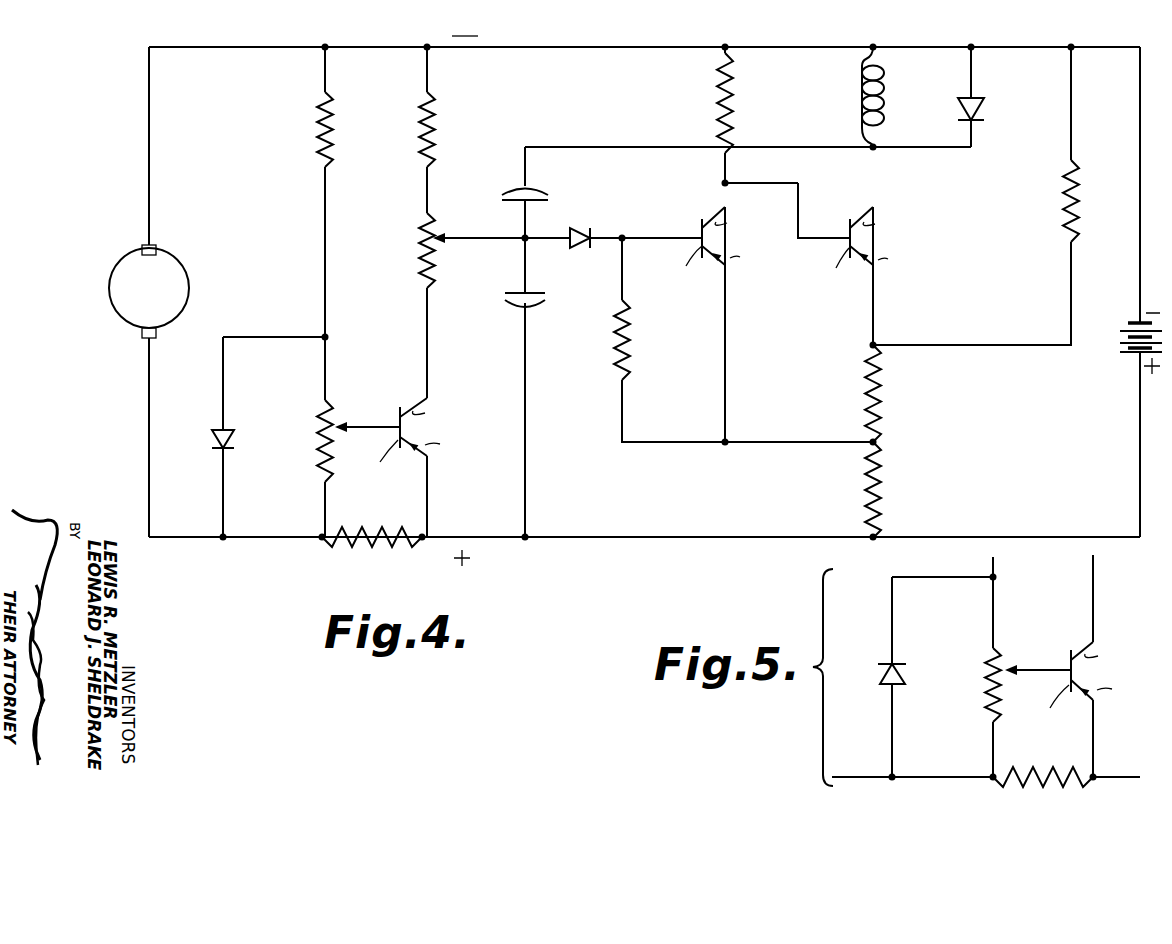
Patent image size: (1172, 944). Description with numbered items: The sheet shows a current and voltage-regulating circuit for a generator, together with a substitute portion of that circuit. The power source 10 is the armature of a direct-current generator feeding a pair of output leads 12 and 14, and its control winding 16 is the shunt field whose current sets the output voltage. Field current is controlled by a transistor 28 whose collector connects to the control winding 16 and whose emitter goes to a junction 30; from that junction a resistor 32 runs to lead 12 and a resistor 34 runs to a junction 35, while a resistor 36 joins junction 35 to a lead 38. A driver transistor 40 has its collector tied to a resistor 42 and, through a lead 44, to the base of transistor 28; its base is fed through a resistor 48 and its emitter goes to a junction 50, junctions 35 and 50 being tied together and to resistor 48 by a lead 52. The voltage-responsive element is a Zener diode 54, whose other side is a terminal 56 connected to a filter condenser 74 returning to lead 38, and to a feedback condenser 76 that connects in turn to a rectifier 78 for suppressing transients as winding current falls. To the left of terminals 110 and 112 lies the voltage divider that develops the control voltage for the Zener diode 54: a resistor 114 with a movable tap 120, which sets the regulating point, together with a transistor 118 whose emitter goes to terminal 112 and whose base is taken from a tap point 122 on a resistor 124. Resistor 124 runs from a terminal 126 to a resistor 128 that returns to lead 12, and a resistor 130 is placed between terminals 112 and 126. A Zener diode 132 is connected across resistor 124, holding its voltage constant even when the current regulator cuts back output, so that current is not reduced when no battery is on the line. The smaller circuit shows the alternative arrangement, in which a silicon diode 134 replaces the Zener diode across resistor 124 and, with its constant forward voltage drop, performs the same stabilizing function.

In FIG. 4, the power source 10 is at (178, 281).
In FIG. 4, the direct-current output lead 12 is at (193, 47).
In FIG. 4, the direct-current output lead 14 is at (150, 436).
In FIG. 4, the control winding 16 is at (860, 88).
In FIG. 4, the transistor 28 is at (848, 234).
In FIG. 4, the junction 30 is at (870, 343).
In FIG. 4, the resistor 32 is at (1066, 203).
In FIG. 4, the resistor 34 is at (880, 390).
In FIG. 4, the junction 35 is at (878, 442).
In FIG. 4, the resistor 36 is at (880, 490).
In FIG. 4, the lead 38 is at (698, 540).
In FIG. 4, the driver transistor 40 is at (700, 222).
In FIG. 4, the resistor 42 is at (738, 92).
In FIG. 4, the lead 44 is at (752, 183).
In FIG. 4, the resistor 48 is at (633, 340).
In FIG. 4, the junction 50 is at (730, 440).
In FIG. 4, the lead 52 is at (795, 445).
In FIG. 4, the Zener diode 54 is at (578, 230).
In FIG. 4, the terminal 56 is at (528, 236).
In FIG. 4, the condenser 74 is at (535, 306).
In FIG. 4, the condenser 76 is at (512, 185).
In FIG. 4, the rectifier 78 is at (985, 108).
In FIG. 4, the terminal 110 is at (425, 46).
In FIG. 4, the terminal 112 is at (424, 536).
In FIG. 5, the terminal 112 is at (1095, 775).
In FIG. 4, the resistor 114 is at (433, 118).
In FIG. 4, the transistor 118 is at (396, 419).
In FIG. 5, the transistor 118 is at (1068, 656).
In FIG. 4, the movable tap 120 is at (442, 236).
In FIG. 4, the tap point 122 is at (342, 424).
In FIG. 5, the tap point 122 is at (1012, 666).
In FIG. 4, the resistor 124 is at (322, 412).
In FIG. 5, the resistor 124 is at (988, 664).
In FIG. 4, the terminal 126 is at (321, 535).
In FIG. 5, the terminal 126 is at (991, 775).
In FIG. 4, the resistor 128 is at (320, 128).
In FIG. 4, the resistor 130 is at (372, 547).
In FIG. 5, the resistor 130 is at (1032, 768).
In FIG. 4, the Zener diode 132 is at (236, 440).
In FIG. 5, the silicon diode 134 is at (900, 680).